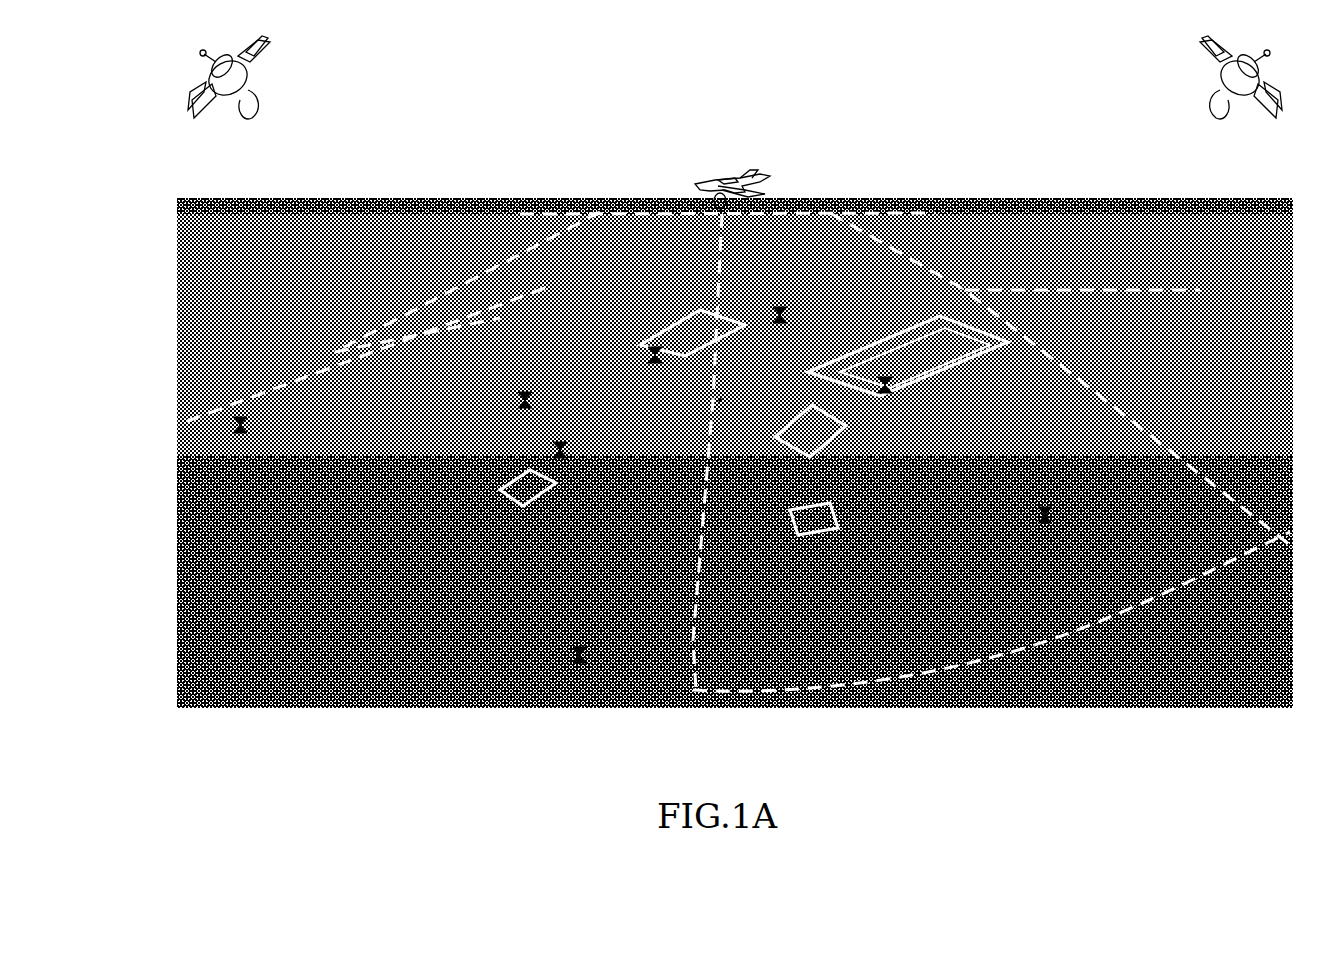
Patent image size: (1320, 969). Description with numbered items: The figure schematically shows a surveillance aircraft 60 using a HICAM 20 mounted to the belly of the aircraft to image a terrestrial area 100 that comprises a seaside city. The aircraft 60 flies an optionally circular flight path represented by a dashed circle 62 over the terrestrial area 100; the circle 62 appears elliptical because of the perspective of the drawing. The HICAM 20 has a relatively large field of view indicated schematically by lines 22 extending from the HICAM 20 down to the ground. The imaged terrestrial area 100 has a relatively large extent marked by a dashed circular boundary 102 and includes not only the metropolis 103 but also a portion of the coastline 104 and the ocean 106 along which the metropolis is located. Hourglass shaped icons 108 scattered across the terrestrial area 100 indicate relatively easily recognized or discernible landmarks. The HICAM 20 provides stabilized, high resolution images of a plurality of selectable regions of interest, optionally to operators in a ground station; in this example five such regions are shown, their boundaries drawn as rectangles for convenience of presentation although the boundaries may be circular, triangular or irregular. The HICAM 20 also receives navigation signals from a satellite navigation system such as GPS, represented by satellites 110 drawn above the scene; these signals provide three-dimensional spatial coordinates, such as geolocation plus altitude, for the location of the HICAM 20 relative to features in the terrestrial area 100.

The HICAM 20 is at (704, 204).
The lines 22 is at (548, 273).
The surveillance aircraft 60 is at (724, 180).
The dashed circle 62 is at (542, 226).
The terrestrial area 100 is at (935, 398).
The dashed circular boundary 102 is at (330, 343).
The metropolis 103 is at (718, 392).
The coastline 104 is at (208, 226).
The ocean 106 is at (268, 206).
The hourglass shaped icons 108 is at (553, 450).
The satellites 110 is at (256, 70).